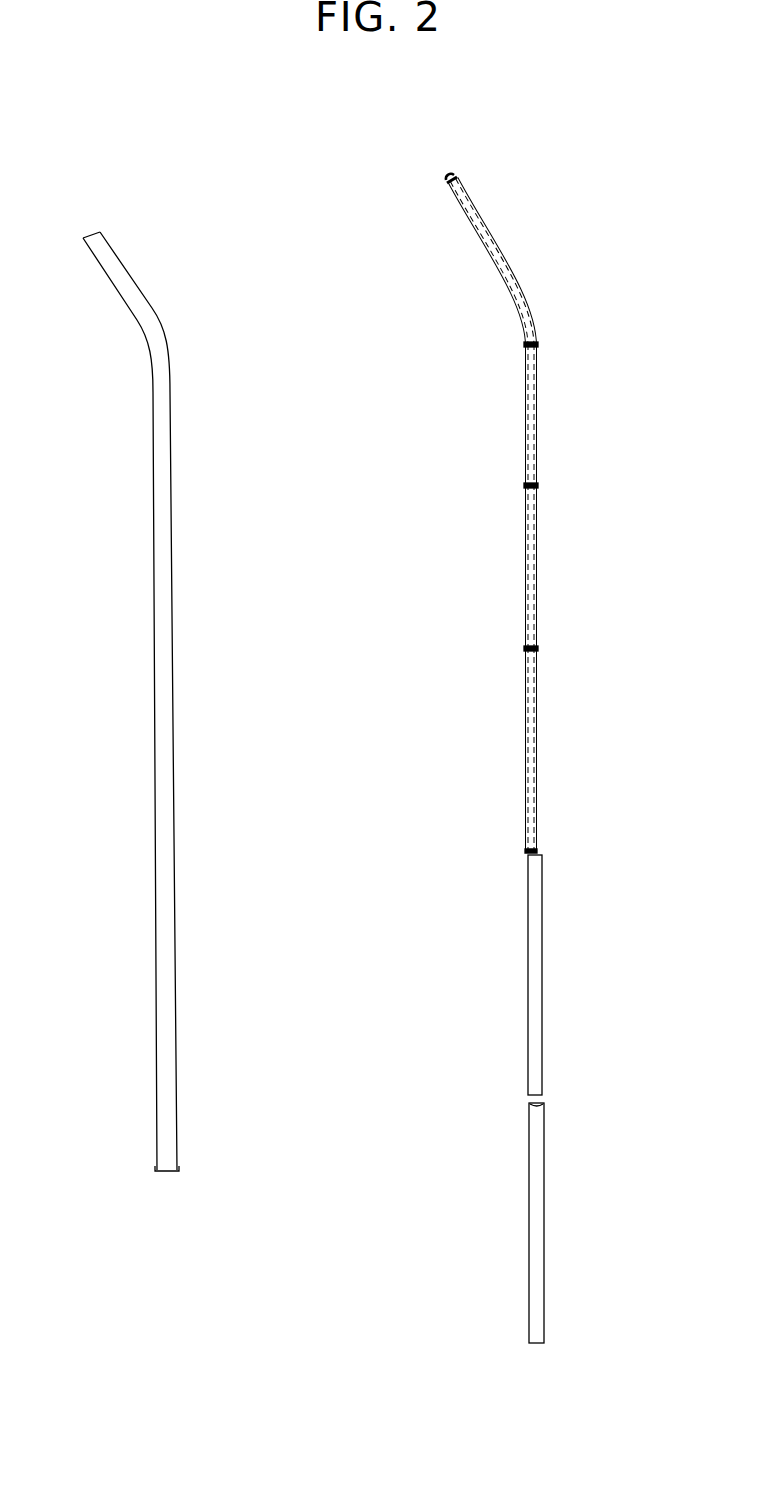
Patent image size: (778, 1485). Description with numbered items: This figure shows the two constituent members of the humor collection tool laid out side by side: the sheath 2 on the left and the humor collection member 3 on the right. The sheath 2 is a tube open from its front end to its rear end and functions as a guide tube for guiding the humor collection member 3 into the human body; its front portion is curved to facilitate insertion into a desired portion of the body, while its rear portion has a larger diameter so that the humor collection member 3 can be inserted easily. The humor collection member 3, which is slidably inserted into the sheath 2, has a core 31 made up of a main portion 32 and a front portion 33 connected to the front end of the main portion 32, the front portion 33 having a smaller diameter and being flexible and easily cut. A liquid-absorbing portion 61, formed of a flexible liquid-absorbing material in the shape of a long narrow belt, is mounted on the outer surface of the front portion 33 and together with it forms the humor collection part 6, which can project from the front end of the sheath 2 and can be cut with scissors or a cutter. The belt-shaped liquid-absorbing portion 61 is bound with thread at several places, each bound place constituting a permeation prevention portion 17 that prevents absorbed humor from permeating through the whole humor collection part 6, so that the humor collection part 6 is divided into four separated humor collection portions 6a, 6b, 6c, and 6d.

The sheath 2 is at (165, 572).
The humor collection member 3 is at (527, 758).
The humor collection part 6 is at (523, 513).
The separated humor collection portion 6a is at (482, 238).
The separated humor collection portion 6b is at (535, 398).
The separated humor collection portion 6c is at (533, 555).
The separated humor collection portion 6d is at (535, 740).
The permeation prevention portion 17 is at (535, 342).
The core 31 is at (536, 957).
The main portion 32 is at (537, 893).
The front portion 33 is at (537, 577).
The liquid-absorbing portion 61 is at (520, 286).